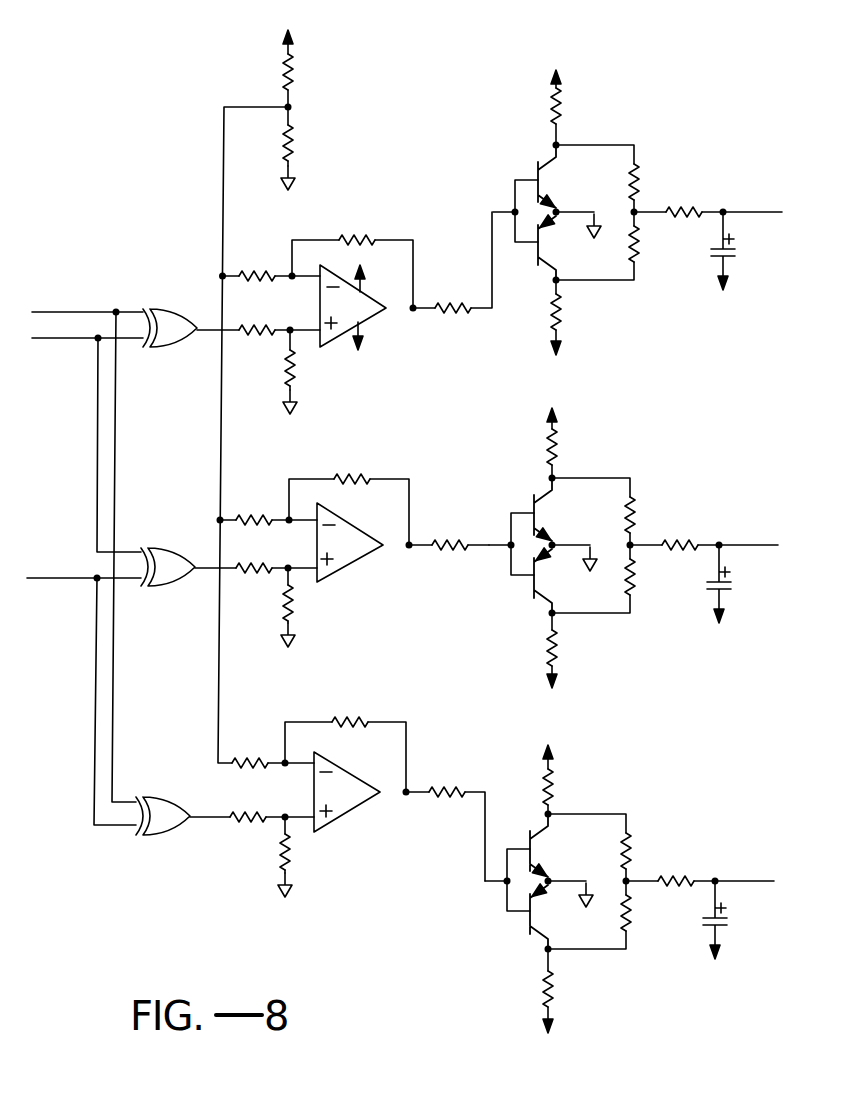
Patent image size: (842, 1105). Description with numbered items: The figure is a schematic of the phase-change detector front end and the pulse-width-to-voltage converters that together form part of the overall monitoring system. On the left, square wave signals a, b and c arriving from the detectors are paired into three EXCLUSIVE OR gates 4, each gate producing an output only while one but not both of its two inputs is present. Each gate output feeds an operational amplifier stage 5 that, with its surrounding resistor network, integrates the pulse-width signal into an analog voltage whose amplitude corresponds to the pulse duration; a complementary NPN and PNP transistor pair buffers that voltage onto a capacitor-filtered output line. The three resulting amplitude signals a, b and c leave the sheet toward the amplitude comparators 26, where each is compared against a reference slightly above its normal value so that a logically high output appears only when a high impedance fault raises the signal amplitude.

The amplitude comparator 26 is at (148, 88).
The exclusive-OR gate integrated circuit 4 is at (166, 572).
The operational amplifier integrated circuit 5 is at (350, 548).